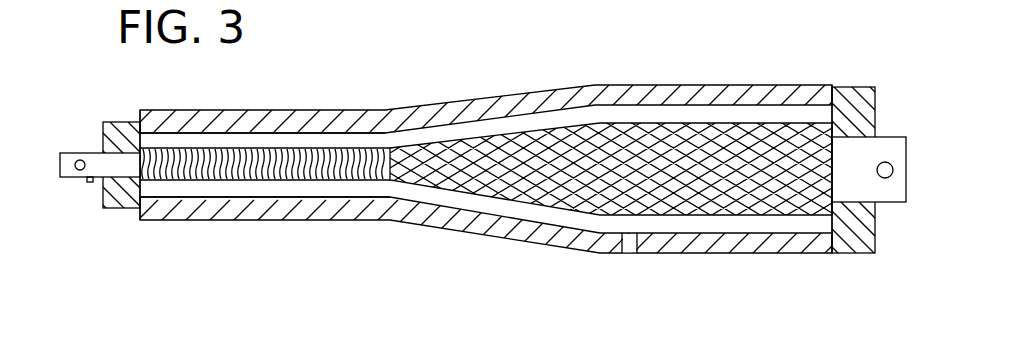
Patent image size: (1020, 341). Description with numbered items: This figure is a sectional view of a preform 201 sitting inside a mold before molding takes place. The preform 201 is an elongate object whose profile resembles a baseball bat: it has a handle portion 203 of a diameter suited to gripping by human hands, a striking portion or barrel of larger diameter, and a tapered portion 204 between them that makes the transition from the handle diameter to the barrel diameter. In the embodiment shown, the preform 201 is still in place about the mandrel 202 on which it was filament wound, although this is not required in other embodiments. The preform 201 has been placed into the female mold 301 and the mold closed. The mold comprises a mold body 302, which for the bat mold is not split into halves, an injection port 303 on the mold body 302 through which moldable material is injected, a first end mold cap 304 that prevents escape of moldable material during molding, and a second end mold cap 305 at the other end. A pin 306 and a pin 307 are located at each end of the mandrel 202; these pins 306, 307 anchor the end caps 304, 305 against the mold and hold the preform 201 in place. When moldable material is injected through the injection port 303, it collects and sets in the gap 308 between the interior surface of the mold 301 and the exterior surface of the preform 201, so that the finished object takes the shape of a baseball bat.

The preform 201 is at (452, 208).
The mandrel 202 is at (90, 182).
The handle portion 203 is at (265, 181).
The tapered portion 204 is at (503, 138).
The female mold 301 is at (645, 84).
The mold body 302 is at (805, 254).
The injection port 303 is at (627, 254).
The first end mold cap 304 is at (123, 122).
The second end mold cap 305 is at (845, 94).
The pin 306 is at (885, 178).
The pin 307 is at (84, 152).
The gap 308 is at (318, 138).